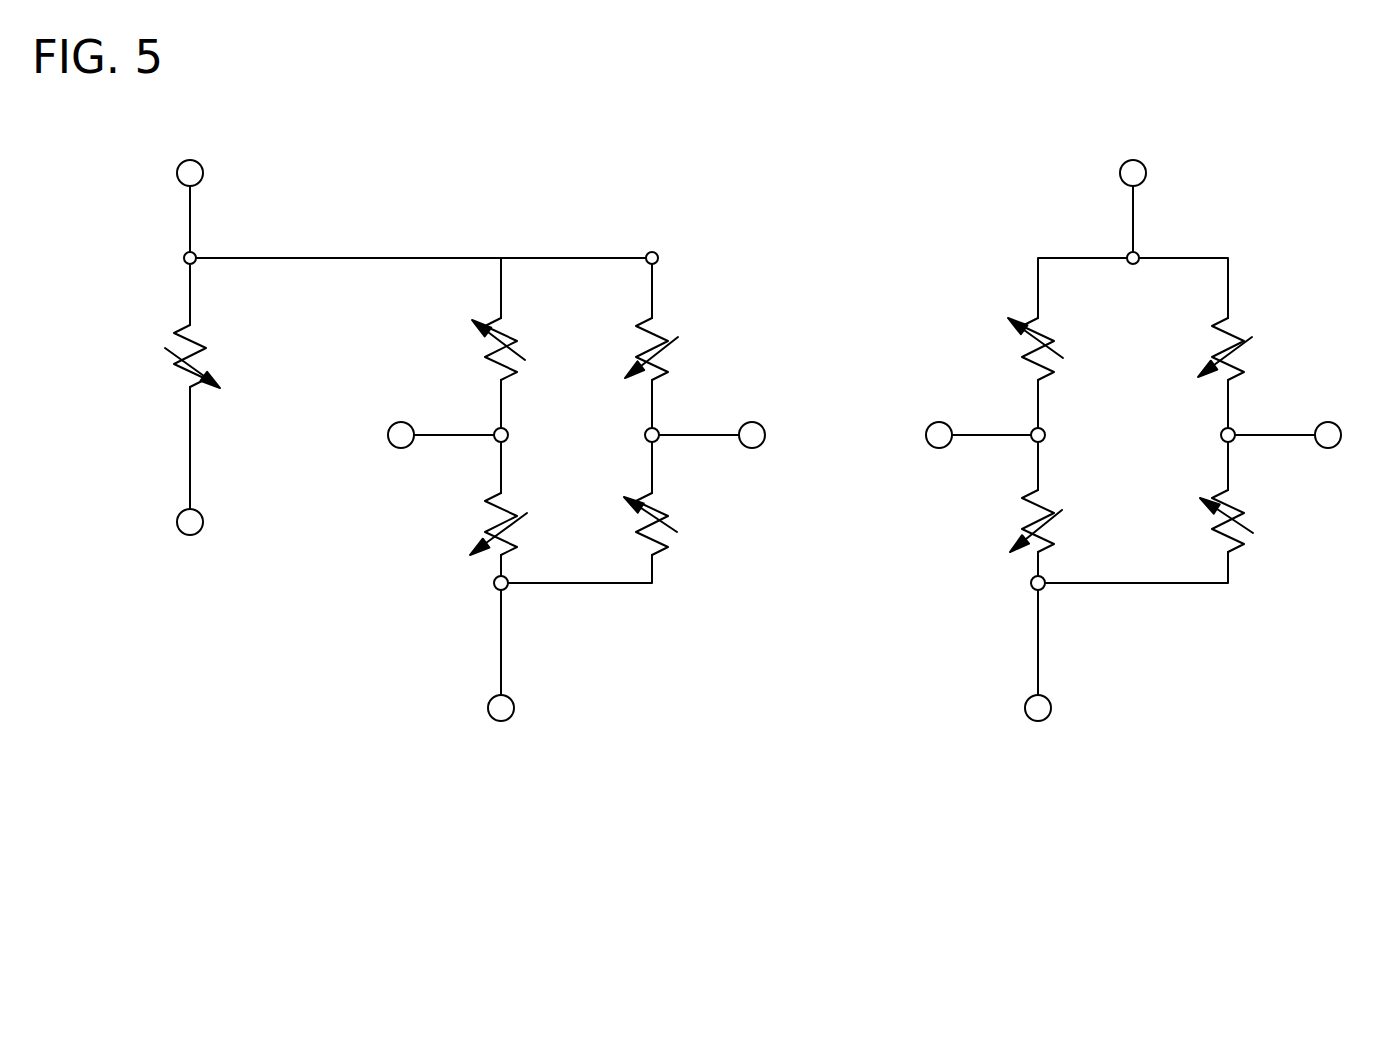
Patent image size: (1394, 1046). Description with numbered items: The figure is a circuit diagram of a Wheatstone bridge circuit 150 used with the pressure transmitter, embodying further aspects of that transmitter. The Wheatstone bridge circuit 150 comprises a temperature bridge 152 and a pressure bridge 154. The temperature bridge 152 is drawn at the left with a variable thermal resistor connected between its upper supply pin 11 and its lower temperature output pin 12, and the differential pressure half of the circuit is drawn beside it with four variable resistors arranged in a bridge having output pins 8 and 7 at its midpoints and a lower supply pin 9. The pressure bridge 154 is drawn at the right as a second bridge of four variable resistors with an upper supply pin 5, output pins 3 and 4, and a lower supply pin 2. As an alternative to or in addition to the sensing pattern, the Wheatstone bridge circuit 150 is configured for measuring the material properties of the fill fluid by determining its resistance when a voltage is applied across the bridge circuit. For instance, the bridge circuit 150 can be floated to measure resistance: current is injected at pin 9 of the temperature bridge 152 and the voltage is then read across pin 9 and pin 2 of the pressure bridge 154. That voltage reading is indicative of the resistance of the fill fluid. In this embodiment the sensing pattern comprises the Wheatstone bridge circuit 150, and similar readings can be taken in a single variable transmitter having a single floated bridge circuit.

The pin 2 is at (1038, 729).
The absolute pressure bridge negative output terminal Vo- 3 is at (922, 436).
The absolute pressure bridge positive output terminal Vo+ 4 is at (1343, 436).
The absolute pressure bridge positive supply terminal VB(+) 5 is at (1133, 187).
The differential pressure bridge positive output terminal Vo+ 7 is at (768, 436).
The differential pressure bridge negative output terminal Vo- 8 is at (384, 436).
The pin 9 is at (501, 729).
The temperature bridge positive supply terminal VB(+) 11 is at (189, 187).
The temperature output terminal Tout 12 is at (214, 519).
The Wheatstone bridge circuit 150 is at (279, 841).
The temperature bridge 152 is at (296, 667).
The pressure bridge 154 is at (1190, 702).